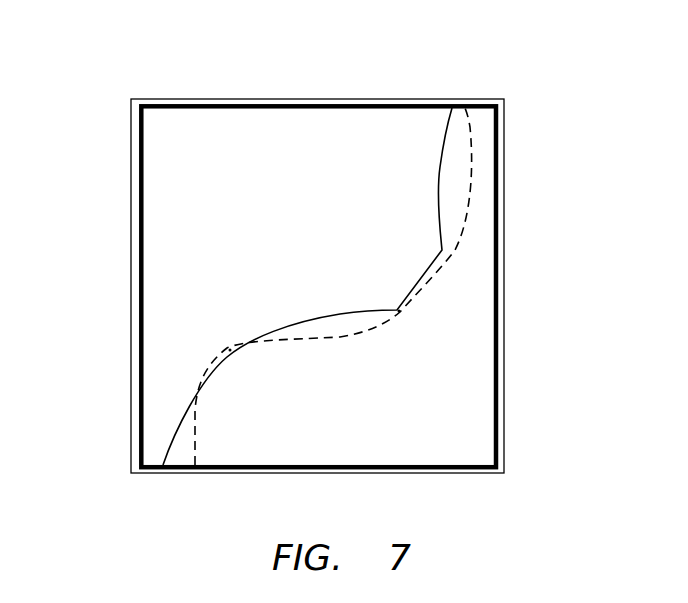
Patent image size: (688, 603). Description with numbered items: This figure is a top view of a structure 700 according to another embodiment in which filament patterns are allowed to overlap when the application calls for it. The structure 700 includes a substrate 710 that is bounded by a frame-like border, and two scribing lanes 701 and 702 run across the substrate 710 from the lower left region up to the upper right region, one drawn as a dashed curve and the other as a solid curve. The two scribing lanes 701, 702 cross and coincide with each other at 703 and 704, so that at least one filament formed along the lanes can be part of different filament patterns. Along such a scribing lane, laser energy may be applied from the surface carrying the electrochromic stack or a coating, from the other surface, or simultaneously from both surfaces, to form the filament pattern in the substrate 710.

The structure 700 is at (140, 57).
The substrate 710 is at (128, 283).
The scribing lane 701 is at (480, 165).
The scribing lane 702 is at (440, 215).
The overlap location 703 is at (408, 312).
The overlap location 704 is at (222, 348).